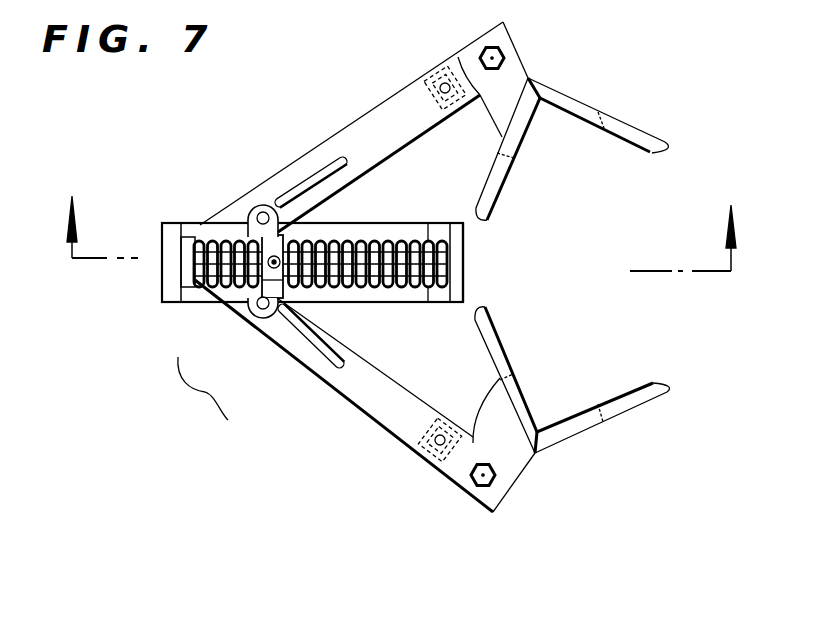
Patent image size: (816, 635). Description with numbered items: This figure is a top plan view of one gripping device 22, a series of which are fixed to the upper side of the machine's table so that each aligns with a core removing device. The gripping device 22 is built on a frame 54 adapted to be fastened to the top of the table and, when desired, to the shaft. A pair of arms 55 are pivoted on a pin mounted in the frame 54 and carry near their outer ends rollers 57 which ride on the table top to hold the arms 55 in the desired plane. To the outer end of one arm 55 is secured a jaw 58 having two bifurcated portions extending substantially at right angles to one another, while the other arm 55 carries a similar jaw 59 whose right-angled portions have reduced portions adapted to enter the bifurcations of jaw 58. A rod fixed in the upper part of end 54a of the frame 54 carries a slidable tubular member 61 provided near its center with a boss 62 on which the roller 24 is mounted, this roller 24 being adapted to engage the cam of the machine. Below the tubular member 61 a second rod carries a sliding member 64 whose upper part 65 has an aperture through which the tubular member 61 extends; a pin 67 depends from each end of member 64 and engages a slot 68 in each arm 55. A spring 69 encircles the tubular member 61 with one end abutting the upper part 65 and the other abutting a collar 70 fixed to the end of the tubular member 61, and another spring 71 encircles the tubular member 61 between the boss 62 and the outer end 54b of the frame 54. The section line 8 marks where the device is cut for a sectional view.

The section line 8- 8 is at (397, 207).
The gripping device 22 is at (199, 390).
The roller 24 is at (282, 280).
The frame 54 is at (390, 292).
The end of frame 54a is at (168, 240).
The outer end of frame 54b is at (453, 278).
The arms 55 is at (387, 127).
The rollers 57 is at (448, 65).
The jaw 58 is at (578, 107).
The jaw 59 is at (573, 437).
The tubular member 61 is at (403, 245).
The boss 62 is at (282, 233).
The member 64 is at (254, 299).
The upper part 65 is at (258, 237).
The pin 67 is at (263, 212).
The slots 68 is at (315, 187).
The spring 69 is at (197, 237).
The collar 70 is at (187, 273).
The spring 71 is at (370, 243).